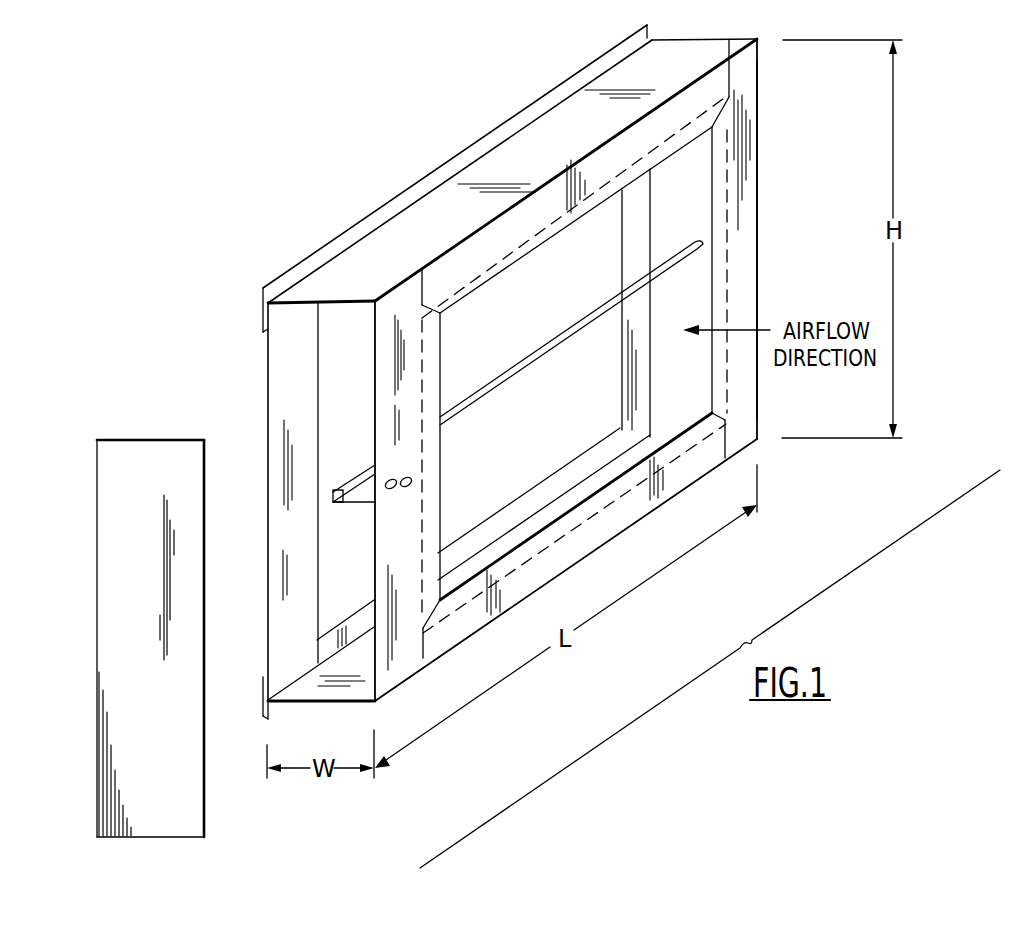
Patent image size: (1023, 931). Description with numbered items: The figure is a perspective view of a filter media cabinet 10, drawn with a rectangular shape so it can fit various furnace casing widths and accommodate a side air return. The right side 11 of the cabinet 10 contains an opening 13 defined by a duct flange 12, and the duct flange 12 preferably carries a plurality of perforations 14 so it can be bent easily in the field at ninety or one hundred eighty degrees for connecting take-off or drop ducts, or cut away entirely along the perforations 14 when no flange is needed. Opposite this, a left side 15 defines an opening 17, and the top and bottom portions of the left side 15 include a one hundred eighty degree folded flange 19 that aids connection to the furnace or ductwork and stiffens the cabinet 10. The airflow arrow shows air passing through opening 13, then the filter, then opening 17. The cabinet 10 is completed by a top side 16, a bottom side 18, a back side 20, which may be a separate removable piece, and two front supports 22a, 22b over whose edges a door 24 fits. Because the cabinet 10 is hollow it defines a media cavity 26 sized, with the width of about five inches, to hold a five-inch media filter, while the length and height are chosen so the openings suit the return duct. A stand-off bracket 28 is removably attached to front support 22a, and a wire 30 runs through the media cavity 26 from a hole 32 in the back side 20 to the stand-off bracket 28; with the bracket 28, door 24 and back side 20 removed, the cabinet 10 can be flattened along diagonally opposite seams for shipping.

The filter media cabinet 10 is at (828, 502).
The right side 11 is at (684, 104).
The duct flange 12 is at (437, 325).
The opening 13 is at (712, 260).
The perforations 14 is at (727, 273).
The left side 15 is at (632, 238).
The top side 16 is at (577, 117).
The opening 17 is at (318, 330).
The bottom side 18 is at (534, 540).
The folded flange 19 is at (393, 207).
The back side 20 is at (713, 188).
The front support 22a is at (407, 543).
The front support 22b is at (290, 650).
The door 24 is at (111, 486).
The media cavity 26 is at (318, 395).
The stand-off bracket 28 is at (353, 500).
The wire 30 is at (472, 405).
The hole 32 is at (712, 229).